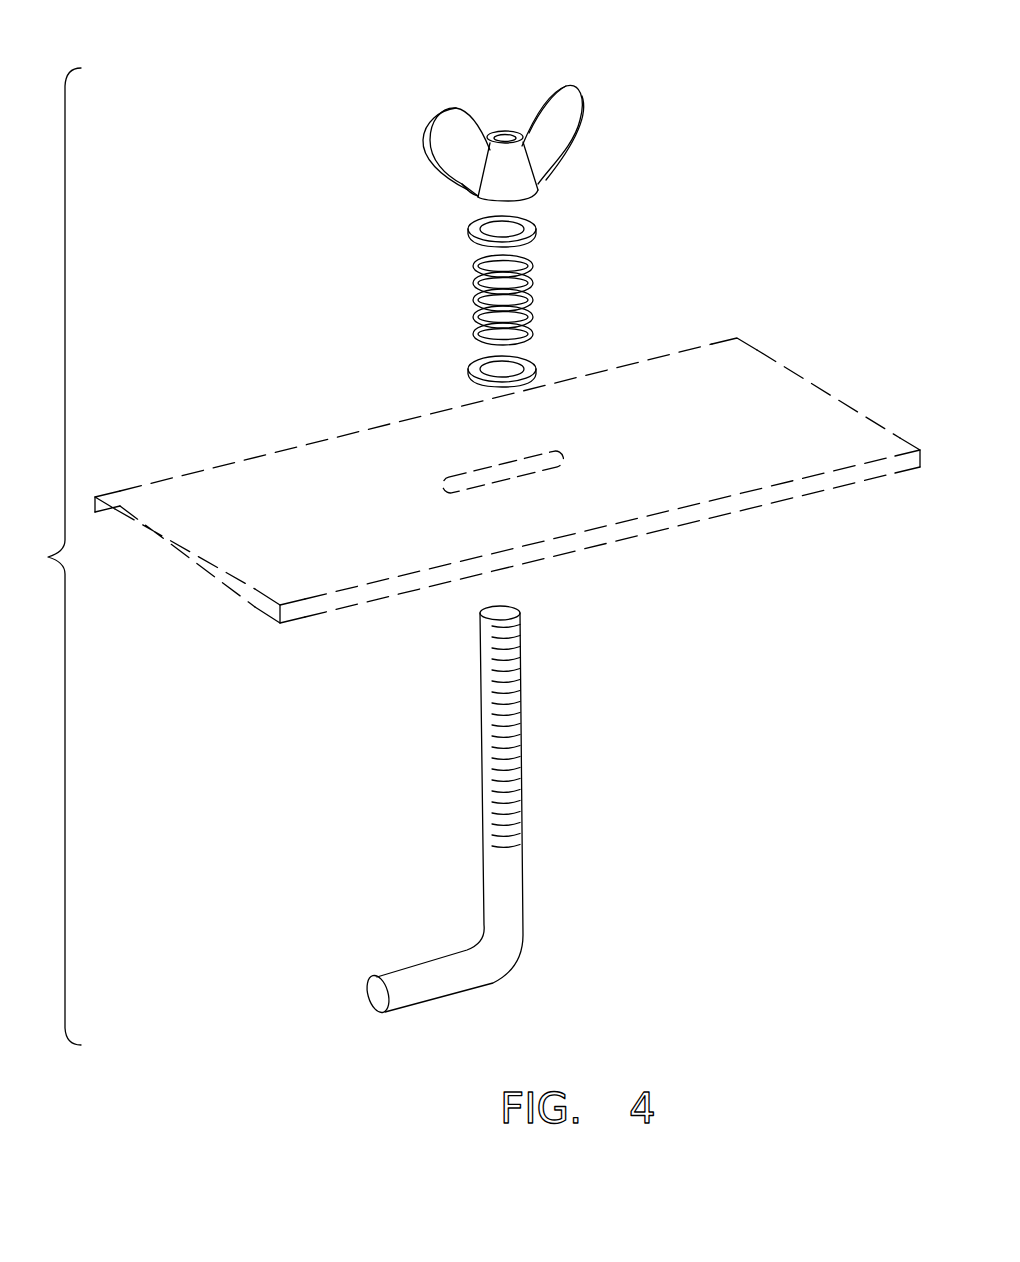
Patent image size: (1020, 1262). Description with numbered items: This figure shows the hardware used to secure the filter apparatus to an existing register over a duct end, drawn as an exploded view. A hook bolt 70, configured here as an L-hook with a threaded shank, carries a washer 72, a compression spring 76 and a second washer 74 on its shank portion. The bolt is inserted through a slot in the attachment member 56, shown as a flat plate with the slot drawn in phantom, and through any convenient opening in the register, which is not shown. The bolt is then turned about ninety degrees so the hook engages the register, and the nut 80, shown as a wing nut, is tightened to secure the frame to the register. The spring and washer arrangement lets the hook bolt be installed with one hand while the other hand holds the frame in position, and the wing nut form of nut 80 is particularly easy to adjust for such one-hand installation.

The nut 80 is at (553, 82).
The washer 72 is at (537, 226).
The compression spring 76 is at (530, 283).
The washer 74 is at (537, 363).
The attachment member 56 is at (777, 360).
The hook bolt 70 is at (523, 877).